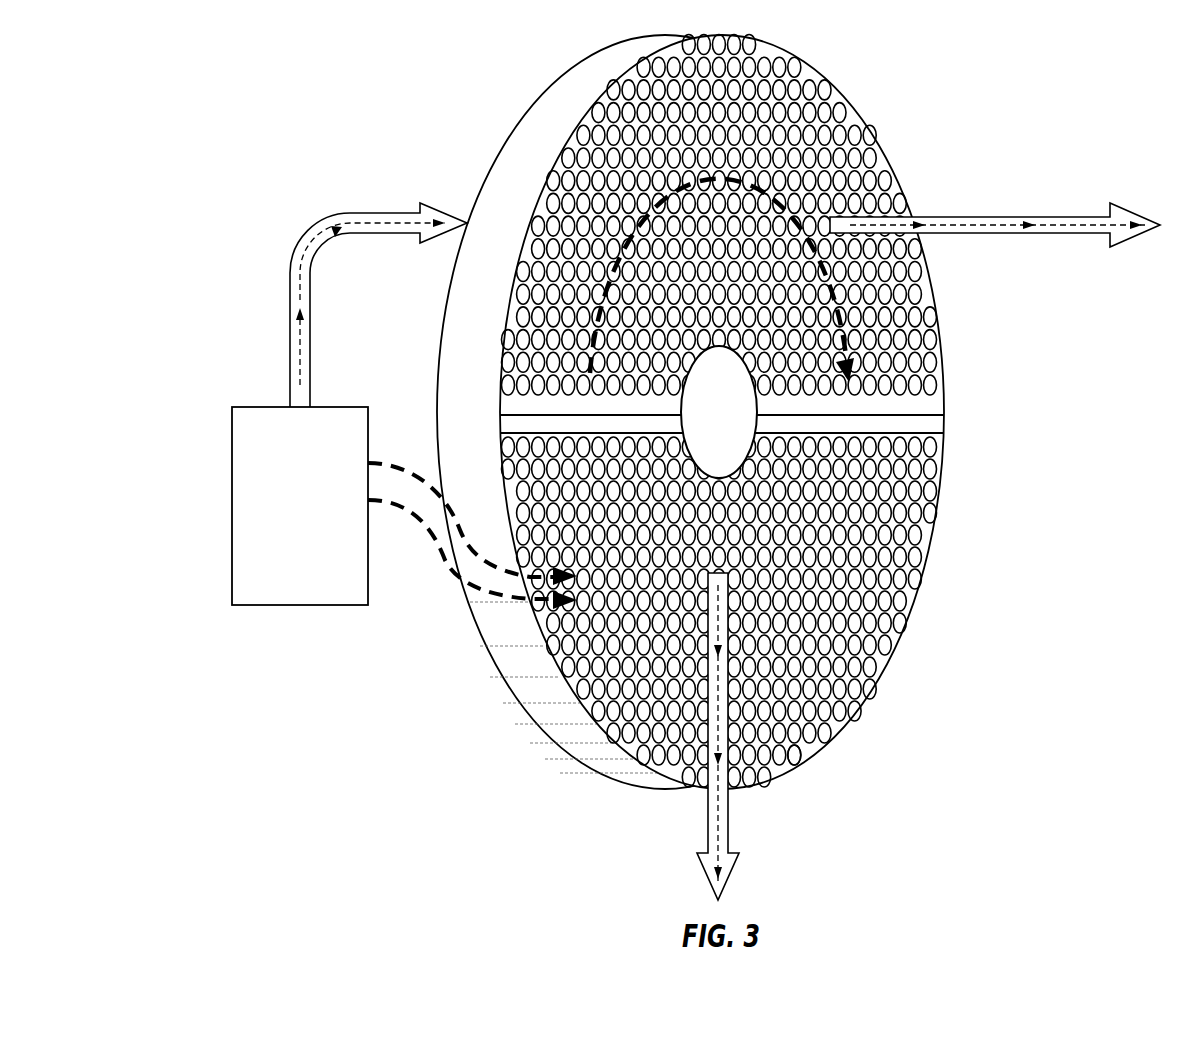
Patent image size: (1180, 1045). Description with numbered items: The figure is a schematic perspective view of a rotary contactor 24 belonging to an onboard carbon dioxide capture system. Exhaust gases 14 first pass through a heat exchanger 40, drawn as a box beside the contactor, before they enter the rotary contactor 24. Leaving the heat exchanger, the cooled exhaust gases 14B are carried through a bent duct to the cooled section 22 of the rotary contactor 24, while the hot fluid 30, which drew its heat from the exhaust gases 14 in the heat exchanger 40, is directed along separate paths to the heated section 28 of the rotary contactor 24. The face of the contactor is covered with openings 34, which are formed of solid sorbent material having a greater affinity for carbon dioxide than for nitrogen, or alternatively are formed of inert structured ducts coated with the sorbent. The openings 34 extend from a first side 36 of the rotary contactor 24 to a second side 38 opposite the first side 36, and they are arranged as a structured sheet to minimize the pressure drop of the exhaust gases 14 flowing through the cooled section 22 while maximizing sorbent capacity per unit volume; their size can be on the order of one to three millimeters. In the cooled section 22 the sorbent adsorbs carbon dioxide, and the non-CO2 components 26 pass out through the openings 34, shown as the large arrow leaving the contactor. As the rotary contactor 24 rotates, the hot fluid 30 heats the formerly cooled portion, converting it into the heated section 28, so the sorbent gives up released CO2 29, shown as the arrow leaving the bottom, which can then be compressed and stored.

The exhaust gases 14 is at (290, 350).
The cooled exhaust gases 14B is at (317, 252).
The cooled section 22 is at (588, 124).
The rotary contactor 24 is at (770, 464).
The non-CO2 components 26 is at (998, 225).
The heated section 28 is at (865, 680).
The released CO2 29 is at (716, 838).
The hot fluid 30 is at (445, 560).
The openings 34 is at (798, 755).
The first side 36 is at (440, 345).
The second side 38 is at (928, 303).
The heat exchanger 40 is at (237, 470).